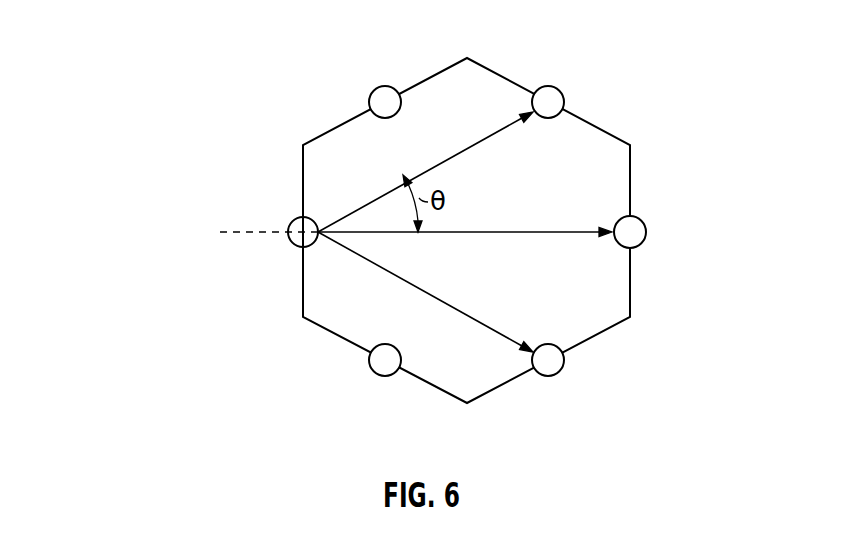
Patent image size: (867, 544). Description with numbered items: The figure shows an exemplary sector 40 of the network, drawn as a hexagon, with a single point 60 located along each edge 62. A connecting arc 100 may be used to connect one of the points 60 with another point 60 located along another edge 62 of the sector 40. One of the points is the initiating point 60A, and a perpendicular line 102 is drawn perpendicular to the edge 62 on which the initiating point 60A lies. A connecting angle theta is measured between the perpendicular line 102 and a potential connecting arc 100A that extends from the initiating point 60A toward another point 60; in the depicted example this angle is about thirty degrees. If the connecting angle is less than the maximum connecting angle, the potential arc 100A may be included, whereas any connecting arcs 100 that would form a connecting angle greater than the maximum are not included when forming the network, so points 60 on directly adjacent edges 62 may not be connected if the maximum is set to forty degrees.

The sector 40 is at (676, 46).
The points 60 is at (373, 92).
The initiating point 60A is at (292, 220).
The edge 62 is at (598, 128).
The connecting arc 100 is at (460, 230).
The potential connecting arc 100A is at (493, 130).
The perpendicular line 102 is at (253, 237).